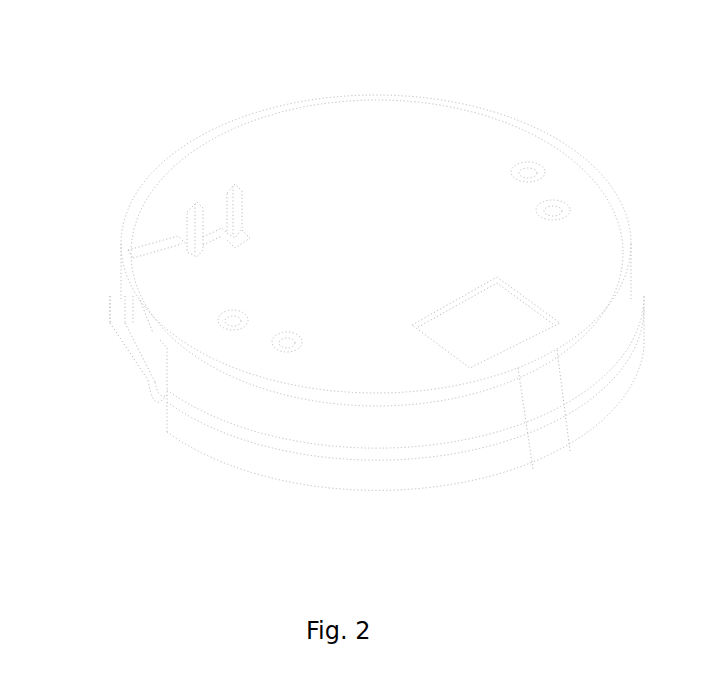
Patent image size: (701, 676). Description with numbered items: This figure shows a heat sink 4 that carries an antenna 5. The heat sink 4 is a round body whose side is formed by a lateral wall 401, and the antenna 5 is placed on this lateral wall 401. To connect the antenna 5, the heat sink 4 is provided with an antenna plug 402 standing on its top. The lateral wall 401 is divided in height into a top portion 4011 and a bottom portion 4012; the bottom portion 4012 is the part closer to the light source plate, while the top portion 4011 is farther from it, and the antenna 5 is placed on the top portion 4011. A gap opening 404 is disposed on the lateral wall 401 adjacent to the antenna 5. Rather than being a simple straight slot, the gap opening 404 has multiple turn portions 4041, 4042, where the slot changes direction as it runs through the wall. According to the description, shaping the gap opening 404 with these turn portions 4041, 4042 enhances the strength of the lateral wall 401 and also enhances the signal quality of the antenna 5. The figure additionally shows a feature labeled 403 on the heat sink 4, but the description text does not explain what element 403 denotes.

The heat sink 4 is at (307, 117).
The antenna plug 402 is at (185, 210).
The gap opening 404 is at (132, 250).
The turn portion 4041 is at (127, 309).
The antenna 5 is at (118, 360).
The turn portion 4042 is at (157, 390).
The mounting holes 403 is at (280, 355).
The lateral wall 401 is at (337, 483).
The bottom portion 4012 is at (410, 428).
The top portion 4011 is at (410, 477).